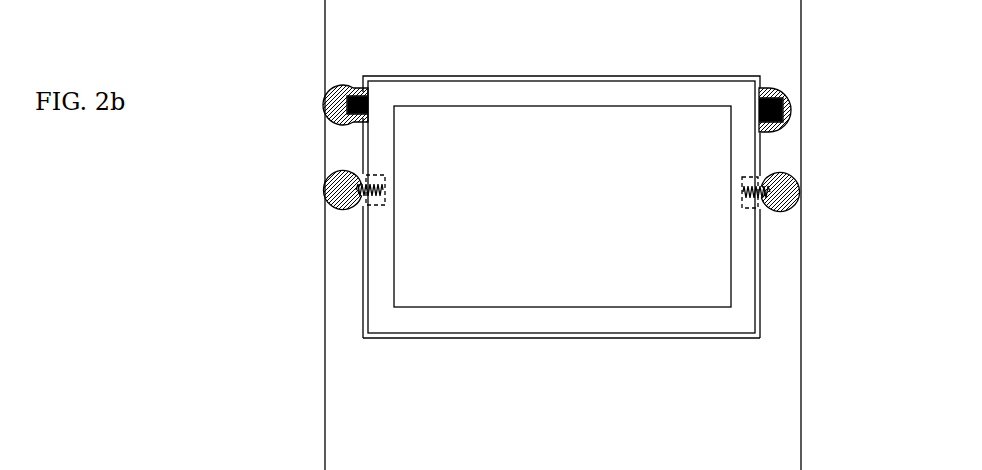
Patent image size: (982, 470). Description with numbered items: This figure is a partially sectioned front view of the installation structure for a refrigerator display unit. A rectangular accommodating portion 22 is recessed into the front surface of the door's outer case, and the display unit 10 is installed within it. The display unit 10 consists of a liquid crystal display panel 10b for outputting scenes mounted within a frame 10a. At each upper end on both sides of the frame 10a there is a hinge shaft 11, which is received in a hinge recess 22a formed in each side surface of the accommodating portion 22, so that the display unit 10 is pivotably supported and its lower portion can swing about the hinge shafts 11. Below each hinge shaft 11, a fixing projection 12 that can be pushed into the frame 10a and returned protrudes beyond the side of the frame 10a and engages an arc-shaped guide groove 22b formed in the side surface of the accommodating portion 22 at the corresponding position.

The display unit 10 is at (533, 338).
The frame 10a is at (595, 328).
The liquid crystal display panel 10b is at (672, 305).
The hinge shaft 11 is at (800, 110).
The fixing projection 12 is at (798, 196).
The accommodating portion 22 is at (533, 77).
The hinge recess 22a is at (784, 86).
The arc-shaped guide groove 22b is at (782, 174).